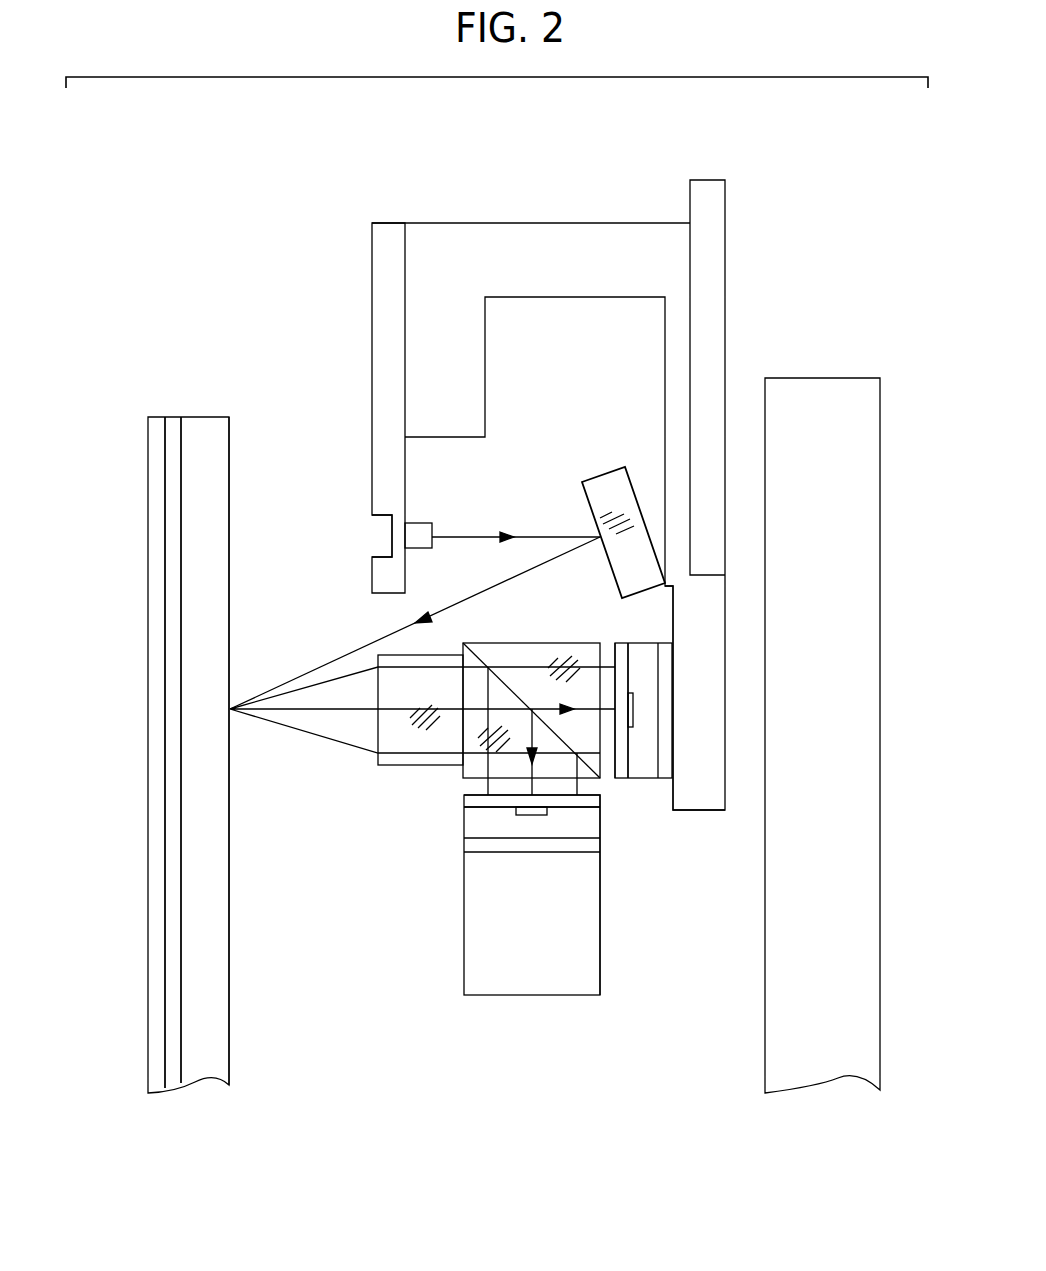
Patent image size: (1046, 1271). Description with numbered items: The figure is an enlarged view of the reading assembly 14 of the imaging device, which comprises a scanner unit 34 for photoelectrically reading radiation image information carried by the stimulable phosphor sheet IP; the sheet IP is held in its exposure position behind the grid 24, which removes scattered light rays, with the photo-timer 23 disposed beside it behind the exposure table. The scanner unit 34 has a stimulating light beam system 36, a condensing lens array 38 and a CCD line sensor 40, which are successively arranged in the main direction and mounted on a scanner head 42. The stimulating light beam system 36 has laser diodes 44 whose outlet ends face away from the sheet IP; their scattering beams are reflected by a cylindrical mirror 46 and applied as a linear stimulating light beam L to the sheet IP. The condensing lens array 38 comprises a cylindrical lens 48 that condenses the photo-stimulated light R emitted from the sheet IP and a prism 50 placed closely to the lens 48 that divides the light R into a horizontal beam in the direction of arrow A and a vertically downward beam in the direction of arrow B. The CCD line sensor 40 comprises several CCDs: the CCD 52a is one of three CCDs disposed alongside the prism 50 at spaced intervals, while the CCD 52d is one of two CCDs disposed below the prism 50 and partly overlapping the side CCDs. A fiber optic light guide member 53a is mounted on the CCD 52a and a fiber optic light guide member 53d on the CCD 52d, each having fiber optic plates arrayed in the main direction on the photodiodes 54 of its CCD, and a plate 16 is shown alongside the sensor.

The reading assembly 14 is at (243, 157).
The glass plate 16 is at (807, 363).
The photo-timer 23 is at (152, 888).
The grid 24 is at (170, 800).
The scanner unit 34 is at (330, 325).
The stimulating light beam system 36 is at (337, 517).
The condensing lens array 38 is at (613, 637).
The CCD line sensor 40 is at (633, 795).
The scanner head 42 is at (464, 243).
The laser diodes 44 is at (420, 530).
The cylindrical mirror 46 is at (605, 483).
The cylindrical lens 48 is at (387, 683).
The prism 50 is at (590, 742).
The CCD 52a is at (653, 663).
The fiber optic light guide member 53a is at (623, 757).
The photodiodes 54 is at (633, 707).
The CCD 52d is at (572, 828).
The fiber optic light guide member 53d is at (507, 802).